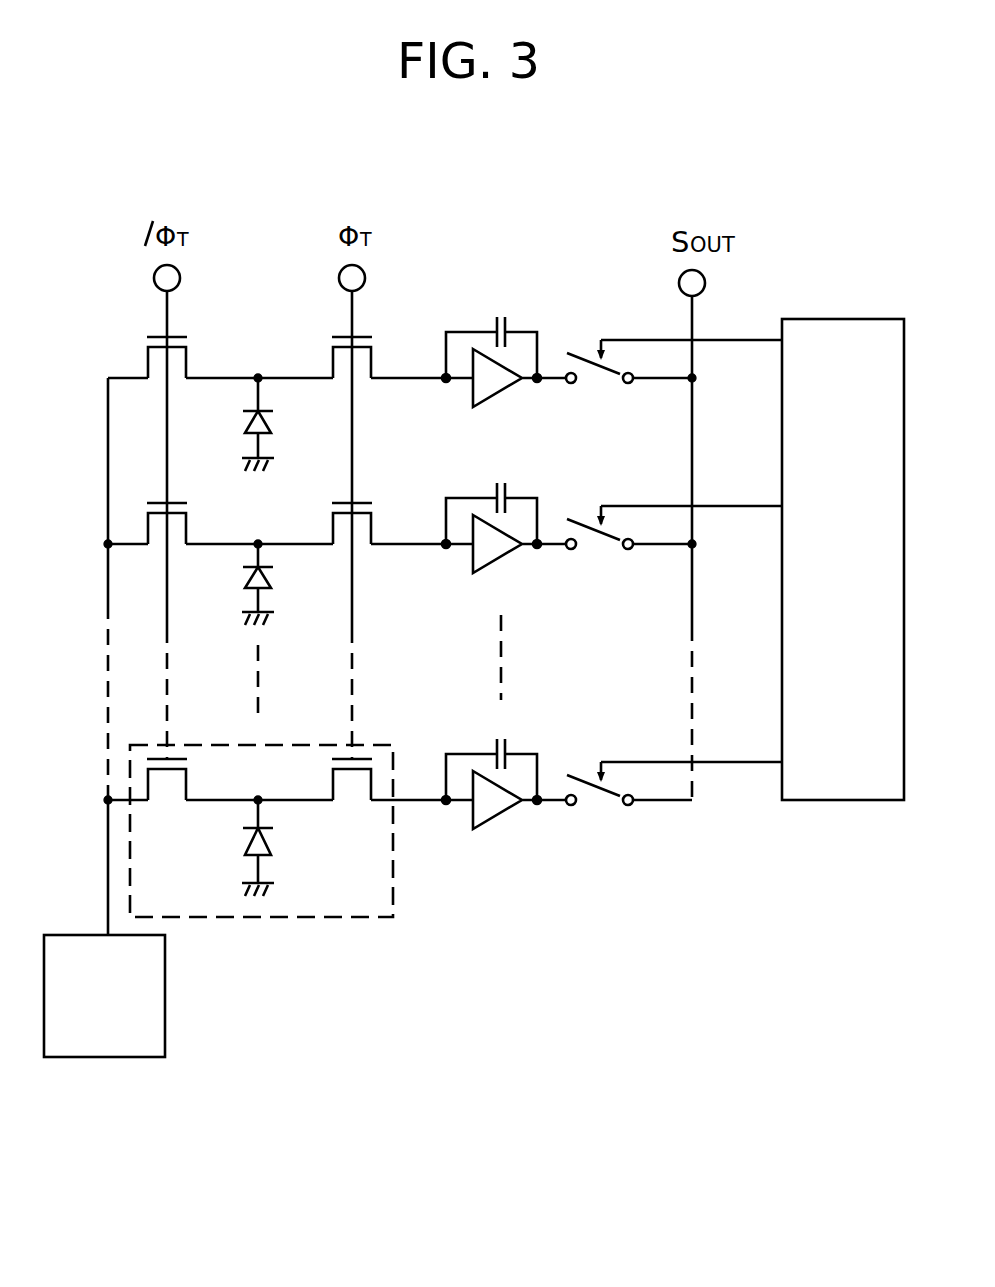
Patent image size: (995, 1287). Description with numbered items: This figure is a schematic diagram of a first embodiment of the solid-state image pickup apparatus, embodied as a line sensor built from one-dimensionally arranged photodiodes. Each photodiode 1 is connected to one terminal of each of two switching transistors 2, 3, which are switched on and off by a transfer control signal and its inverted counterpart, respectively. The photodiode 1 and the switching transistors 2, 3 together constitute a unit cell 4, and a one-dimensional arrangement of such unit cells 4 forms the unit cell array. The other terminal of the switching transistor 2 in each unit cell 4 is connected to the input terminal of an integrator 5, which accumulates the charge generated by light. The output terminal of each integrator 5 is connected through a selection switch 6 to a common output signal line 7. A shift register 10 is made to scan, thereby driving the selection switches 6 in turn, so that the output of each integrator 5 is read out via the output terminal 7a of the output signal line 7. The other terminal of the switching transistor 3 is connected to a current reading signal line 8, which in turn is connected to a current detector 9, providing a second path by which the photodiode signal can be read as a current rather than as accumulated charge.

The photodiode 1 is at (273, 845).
The switching transistor 2 is at (353, 782).
The switching transistor 3 is at (168, 792).
The unit cell 4 is at (352, 918).
The integrator 5 is at (497, 815).
The selection switch 6 is at (593, 808).
The output signal line 7 is at (692, 448).
The output terminal 7a is at (707, 281).
The current reading signal line 8 is at (108, 490).
The current detector 9 is at (113, 1057).
The shift register 10 is at (843, 800).